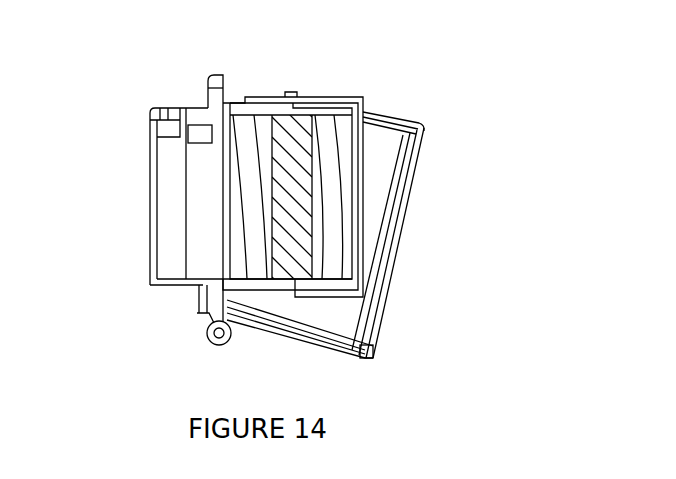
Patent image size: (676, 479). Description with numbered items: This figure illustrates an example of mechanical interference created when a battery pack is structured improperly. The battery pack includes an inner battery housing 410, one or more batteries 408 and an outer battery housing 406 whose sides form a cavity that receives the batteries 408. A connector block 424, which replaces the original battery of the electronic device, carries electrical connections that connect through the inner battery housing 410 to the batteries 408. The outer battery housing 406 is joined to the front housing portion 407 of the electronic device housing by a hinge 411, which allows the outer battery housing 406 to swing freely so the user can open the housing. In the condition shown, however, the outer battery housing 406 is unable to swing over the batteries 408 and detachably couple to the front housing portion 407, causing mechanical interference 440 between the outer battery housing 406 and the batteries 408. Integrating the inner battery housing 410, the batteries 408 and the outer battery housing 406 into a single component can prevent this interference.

The outer battery housing 406 is at (400, 235).
The front housing portion 407 is at (152, 286).
The batteries 408 is at (255, 112).
The inner battery housing 410 is at (228, 160).
The hinge 411 is at (210, 346).
The connector block 424 is at (202, 158).
The mechanical interference 440 is at (364, 110).